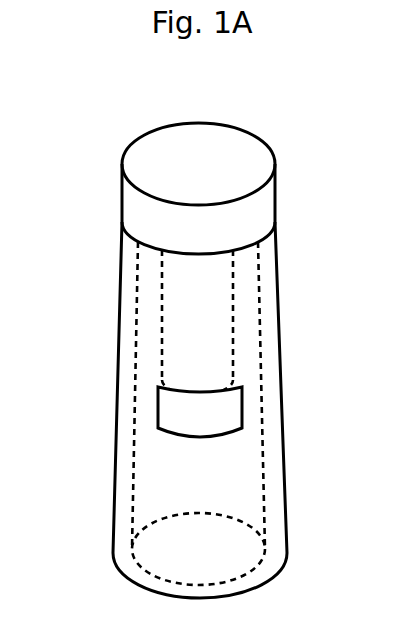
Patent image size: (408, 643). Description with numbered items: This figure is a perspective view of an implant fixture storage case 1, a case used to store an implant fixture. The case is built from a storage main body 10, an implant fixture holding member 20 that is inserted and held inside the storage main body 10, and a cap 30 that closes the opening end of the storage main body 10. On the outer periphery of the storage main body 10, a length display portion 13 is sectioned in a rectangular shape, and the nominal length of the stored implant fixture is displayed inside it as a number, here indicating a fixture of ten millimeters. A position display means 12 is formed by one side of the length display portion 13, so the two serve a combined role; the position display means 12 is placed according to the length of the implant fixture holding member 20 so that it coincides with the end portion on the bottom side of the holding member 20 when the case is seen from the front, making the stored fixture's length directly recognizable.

The implant fixture storage case 1 is at (192, 80).
The storage main body 10 is at (118, 383).
The position display means 12 is at (217, 385).
The length display portion 13 is at (172, 415).
The implant fixture holding member 20 is at (160, 303).
The cap 30 is at (137, 202).